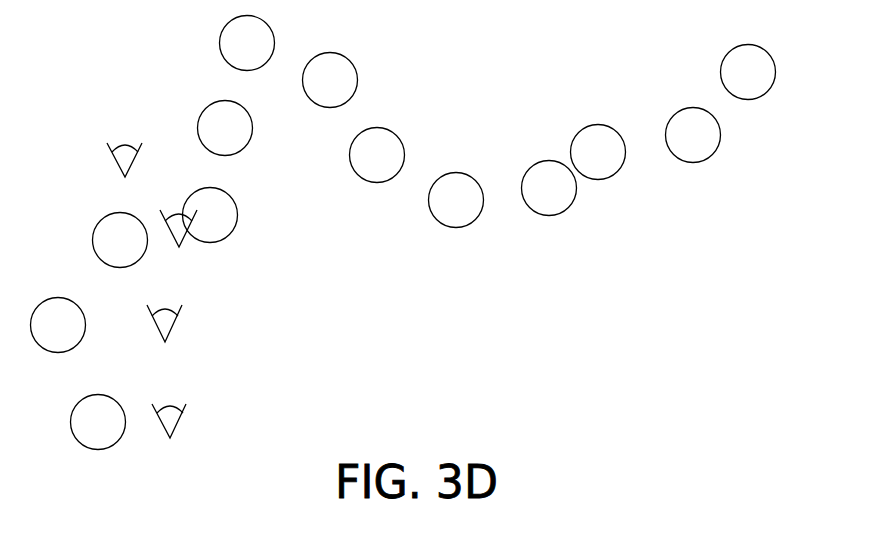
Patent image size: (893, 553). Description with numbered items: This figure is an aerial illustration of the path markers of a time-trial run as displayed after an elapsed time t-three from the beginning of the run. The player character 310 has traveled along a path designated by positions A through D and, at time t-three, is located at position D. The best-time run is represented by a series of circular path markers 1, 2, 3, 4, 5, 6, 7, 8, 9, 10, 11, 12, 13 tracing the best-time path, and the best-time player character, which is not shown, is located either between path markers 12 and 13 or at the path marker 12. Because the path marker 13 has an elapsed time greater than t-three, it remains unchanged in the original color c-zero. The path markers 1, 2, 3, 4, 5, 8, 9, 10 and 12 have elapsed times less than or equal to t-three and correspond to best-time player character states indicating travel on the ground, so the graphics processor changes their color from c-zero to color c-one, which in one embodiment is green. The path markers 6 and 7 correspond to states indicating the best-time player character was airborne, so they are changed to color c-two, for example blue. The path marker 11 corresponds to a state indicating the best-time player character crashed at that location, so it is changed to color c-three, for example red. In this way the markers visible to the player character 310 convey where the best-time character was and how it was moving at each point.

The player character 310 is at (110, 152).
The path marker 1 is at (98, 424).
The path marker 2 is at (58, 327).
The path marker 3 is at (120, 242).
The path marker 4 is at (210, 217).
The path marker 5 is at (225, 130).
The path marker 6 is at (247, 46).
The path marker 7 is at (330, 82).
The path marker 8 is at (377, 157).
The path marker 9 is at (456, 201).
The path marker 10 is at (549, 190).
The path marker 11 is at (598, 154).
The path marker 12 is at (693, 137).
The path marker 13 is at (748, 74).